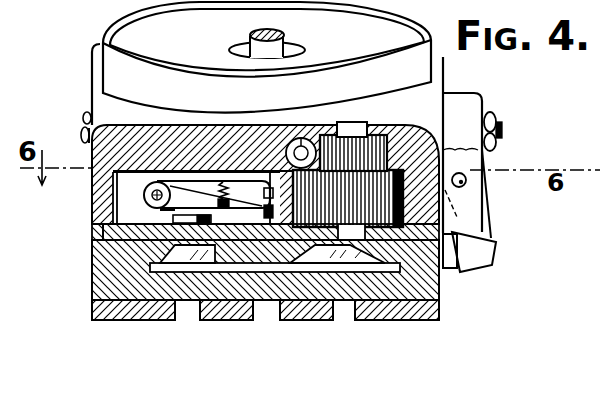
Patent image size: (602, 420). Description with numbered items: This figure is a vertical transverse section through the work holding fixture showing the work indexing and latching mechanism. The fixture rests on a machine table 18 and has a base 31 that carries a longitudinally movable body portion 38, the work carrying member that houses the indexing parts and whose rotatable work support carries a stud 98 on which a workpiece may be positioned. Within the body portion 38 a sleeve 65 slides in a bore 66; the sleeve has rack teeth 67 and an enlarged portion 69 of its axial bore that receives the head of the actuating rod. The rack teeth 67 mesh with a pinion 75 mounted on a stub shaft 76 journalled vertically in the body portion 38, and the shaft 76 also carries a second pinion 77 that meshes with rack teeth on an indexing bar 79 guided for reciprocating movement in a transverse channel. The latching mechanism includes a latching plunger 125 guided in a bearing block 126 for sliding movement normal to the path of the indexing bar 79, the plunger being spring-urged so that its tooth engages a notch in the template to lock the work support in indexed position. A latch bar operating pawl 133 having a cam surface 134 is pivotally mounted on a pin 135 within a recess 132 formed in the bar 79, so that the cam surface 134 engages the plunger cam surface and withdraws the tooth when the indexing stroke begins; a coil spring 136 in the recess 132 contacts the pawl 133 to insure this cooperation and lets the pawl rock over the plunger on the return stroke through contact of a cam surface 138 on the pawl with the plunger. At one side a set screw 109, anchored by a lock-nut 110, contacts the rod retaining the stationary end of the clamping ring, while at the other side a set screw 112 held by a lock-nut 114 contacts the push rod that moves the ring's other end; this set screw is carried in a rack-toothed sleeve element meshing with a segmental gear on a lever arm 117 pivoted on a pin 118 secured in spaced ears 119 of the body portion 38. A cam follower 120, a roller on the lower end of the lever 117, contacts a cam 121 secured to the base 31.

The table 18 is at (98, 311).
The base 31 is at (98, 261).
The body portion 38 is at (95, 93).
The sleeve 65 is at (290, 140).
The bore 66 is at (298, 139).
The enlarged portion 69 is at (305, 138).
The rack teeth 67 is at (321, 143).
The pinion 75 is at (373, 138).
The stub shaft 76 is at (347, 128).
The second pinion 77 is at (386, 190).
The indexing bar 79 is at (183, 162).
The stud 98 is at (281, 36).
The set screw 109 is at (82, 136).
The lock-nut 110 is at (84, 114).
The set screw 112 is at (502, 128).
The lock-nut 114 is at (492, 112).
The lever arm 117 is at (484, 233).
The pin 118 is at (467, 181).
The ears 119 is at (477, 208).
The cam follower 120 is at (487, 254).
The cam 121 is at (455, 269).
The latching plunger 125 is at (270, 198).
The bearing block 126 is at (271, 213).
The recess 132 is at (203, 190).
The latch bar operating pawl 133 is at (164, 212).
The cam surface 134 is at (230, 203).
The pin 135 is at (148, 195).
The coil spring 136 is at (228, 191).
The cam surface 138 is at (211, 219).